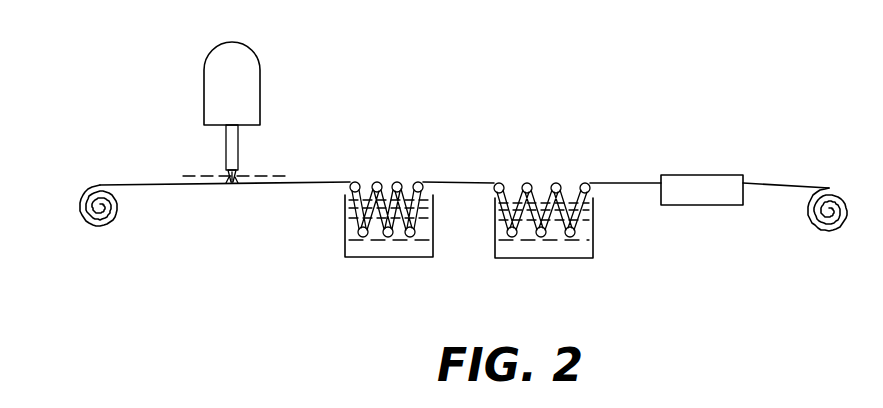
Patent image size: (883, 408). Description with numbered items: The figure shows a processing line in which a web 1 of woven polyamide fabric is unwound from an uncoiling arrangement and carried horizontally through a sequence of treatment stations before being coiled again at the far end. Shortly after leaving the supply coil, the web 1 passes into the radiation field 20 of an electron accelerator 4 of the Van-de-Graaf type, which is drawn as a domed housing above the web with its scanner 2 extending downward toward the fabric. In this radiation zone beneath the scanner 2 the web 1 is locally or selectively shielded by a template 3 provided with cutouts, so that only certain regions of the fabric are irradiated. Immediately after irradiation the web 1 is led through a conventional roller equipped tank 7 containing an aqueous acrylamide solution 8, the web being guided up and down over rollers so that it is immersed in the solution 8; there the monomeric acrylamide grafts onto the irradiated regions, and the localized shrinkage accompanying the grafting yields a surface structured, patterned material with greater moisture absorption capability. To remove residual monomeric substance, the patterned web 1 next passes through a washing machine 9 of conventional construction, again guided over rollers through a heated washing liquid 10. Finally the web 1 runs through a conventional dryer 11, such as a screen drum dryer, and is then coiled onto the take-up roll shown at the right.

The web 1 is at (93, 228).
The scanner 2 is at (226, 138).
The template 3 is at (315, 156).
The electron accelerator 4 is at (245, 55).
The roller equipped tank 7 is at (368, 239).
The acrylamide solution 8 is at (382, 247).
The washing machine 9 is at (553, 240).
The washing liquid 10 is at (577, 249).
The dryer 11 is at (718, 182).
The radiation field 20 is at (238, 179).